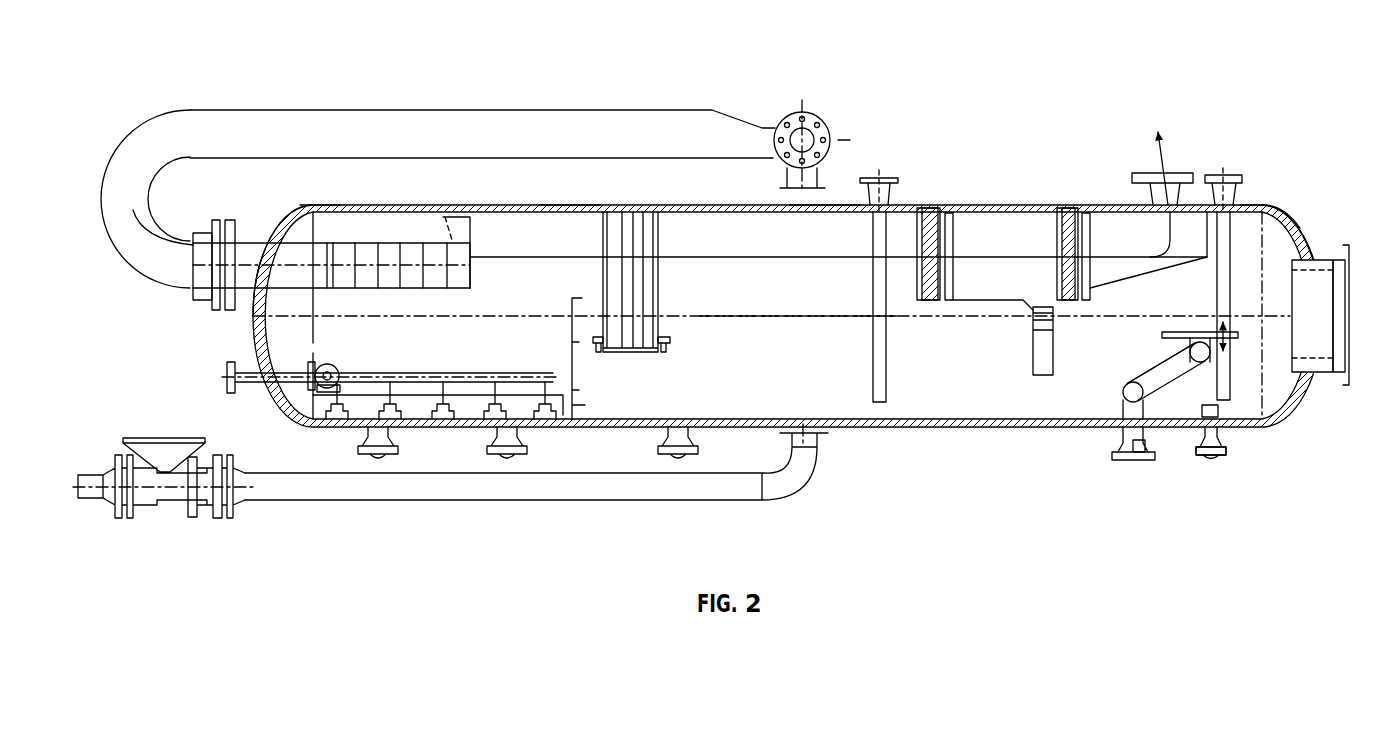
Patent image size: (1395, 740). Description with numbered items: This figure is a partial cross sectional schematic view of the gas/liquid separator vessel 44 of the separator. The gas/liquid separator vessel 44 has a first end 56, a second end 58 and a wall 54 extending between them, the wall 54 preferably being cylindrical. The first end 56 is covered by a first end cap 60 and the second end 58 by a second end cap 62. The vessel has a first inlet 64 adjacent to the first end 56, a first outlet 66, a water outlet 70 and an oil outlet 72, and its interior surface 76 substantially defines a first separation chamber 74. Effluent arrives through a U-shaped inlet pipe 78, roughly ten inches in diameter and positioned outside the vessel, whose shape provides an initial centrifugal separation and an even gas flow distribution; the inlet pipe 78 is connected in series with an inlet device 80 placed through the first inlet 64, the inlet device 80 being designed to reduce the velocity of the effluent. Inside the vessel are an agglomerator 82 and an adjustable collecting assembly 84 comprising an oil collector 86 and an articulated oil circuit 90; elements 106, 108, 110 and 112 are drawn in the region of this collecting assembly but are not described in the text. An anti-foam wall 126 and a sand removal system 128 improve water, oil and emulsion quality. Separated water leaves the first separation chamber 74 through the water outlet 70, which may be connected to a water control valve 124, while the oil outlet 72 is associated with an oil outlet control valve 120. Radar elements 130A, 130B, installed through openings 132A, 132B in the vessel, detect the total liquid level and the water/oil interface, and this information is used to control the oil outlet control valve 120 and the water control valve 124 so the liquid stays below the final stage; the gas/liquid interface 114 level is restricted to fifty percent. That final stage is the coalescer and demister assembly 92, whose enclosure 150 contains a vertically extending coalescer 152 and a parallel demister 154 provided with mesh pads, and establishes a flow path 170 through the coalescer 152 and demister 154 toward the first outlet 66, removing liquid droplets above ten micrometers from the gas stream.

The gas/liquid separator vessel 44 is at (506, 200).
The wall 54 is at (559, 203).
The first end 56 is at (315, 196).
The second end 58 is at (1258, 203).
The first end cap 60 is at (272, 227).
The second end cap 62 is at (1294, 217).
The first inlet 64 is at (259, 256).
The first outlet 66 is at (1172, 210).
The water outlet 70 is at (1209, 430).
The oil outlet 72 is at (1136, 428).
The first separation chamber 74 is at (703, 253).
The interior surface 76 is at (822, 223).
The inlet pipe 78 is at (220, 106).
The inlet device 80 is at (361, 240).
The agglomerator 82 is at (623, 227).
The adjustable collecting assembly 84 is at (1238, 293).
The oil collector 86 is at (1158, 339).
The articulated oil circuit 90 is at (1181, 382).
The coalescer and demister assembly 92 is at (993, 307).
The belt run 106 is at (1152, 360).
The roller 108 is at (1203, 366).
The support post 110 is at (1171, 404).
The roller 112 is at (1122, 398).
The gas/liquid interface 114 is at (832, 322).
The oil outlet control valve 120 is at (1113, 463).
The water control valve 124 is at (1224, 463).
The anti-foam wall 126 is at (467, 404).
The sand removal system 128 is at (579, 368).
The radar element 130A is at (898, 172).
The radar element 130B is at (1238, 168).
The opening 132A is at (888, 200).
The opening 132B is at (1233, 203).
The enclosure 150 is at (1003, 320).
The coalescer 152 is at (930, 308).
The demister 154 is at (1065, 308).
The flow path 170 is at (483, 247).